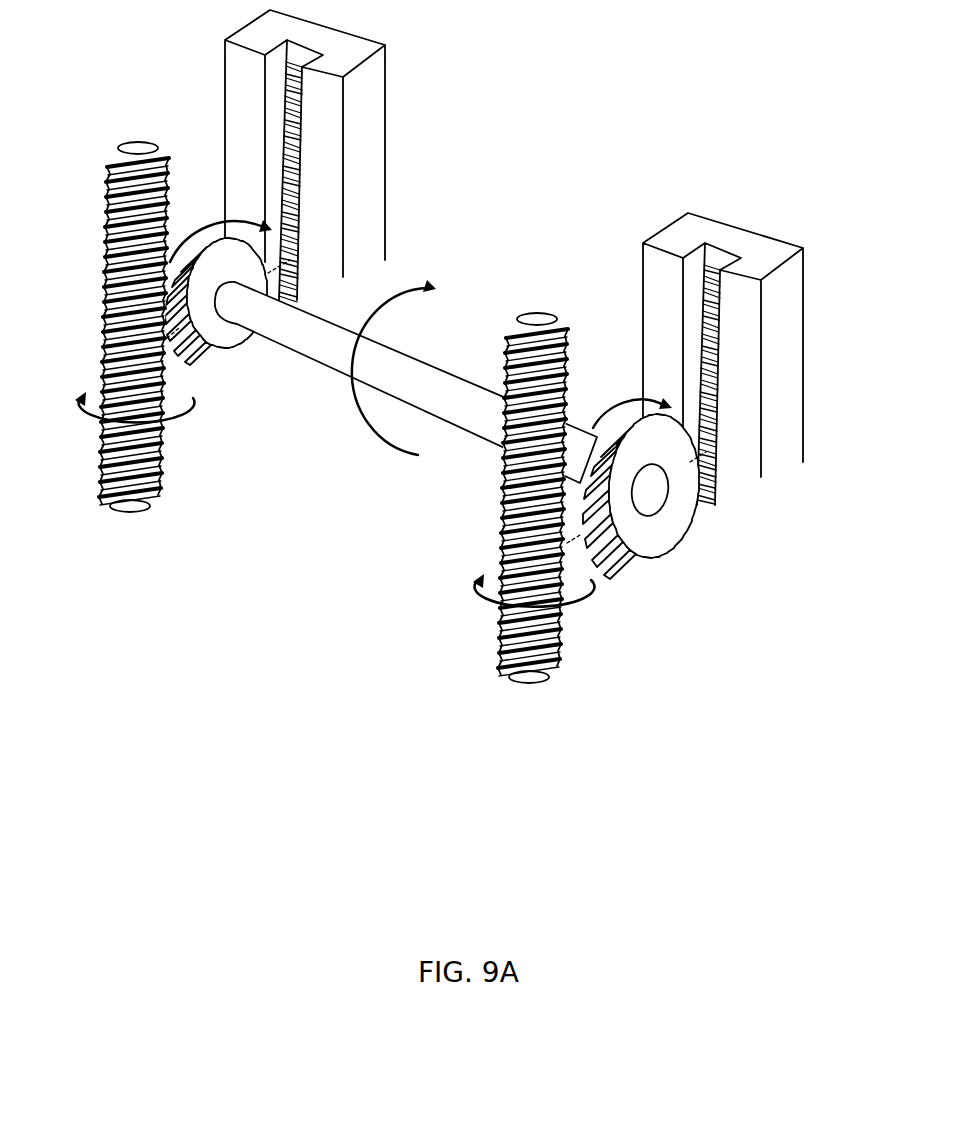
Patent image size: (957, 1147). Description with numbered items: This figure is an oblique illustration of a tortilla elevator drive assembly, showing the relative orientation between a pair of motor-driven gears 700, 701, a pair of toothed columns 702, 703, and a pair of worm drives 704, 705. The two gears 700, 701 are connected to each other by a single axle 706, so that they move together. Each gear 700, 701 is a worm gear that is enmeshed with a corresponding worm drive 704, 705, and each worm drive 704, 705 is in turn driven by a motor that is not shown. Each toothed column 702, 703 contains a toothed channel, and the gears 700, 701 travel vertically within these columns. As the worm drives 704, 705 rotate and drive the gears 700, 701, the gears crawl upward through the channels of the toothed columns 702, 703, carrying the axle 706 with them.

The gear 700 is at (225, 349).
The gear 701 is at (657, 553).
The toothed column 702 is at (368, 93).
The toothed column 703 is at (778, 302).
The worm drive 704 is at (113, 282).
The worm drive 705 is at (508, 515).
The axle 706 is at (312, 343).